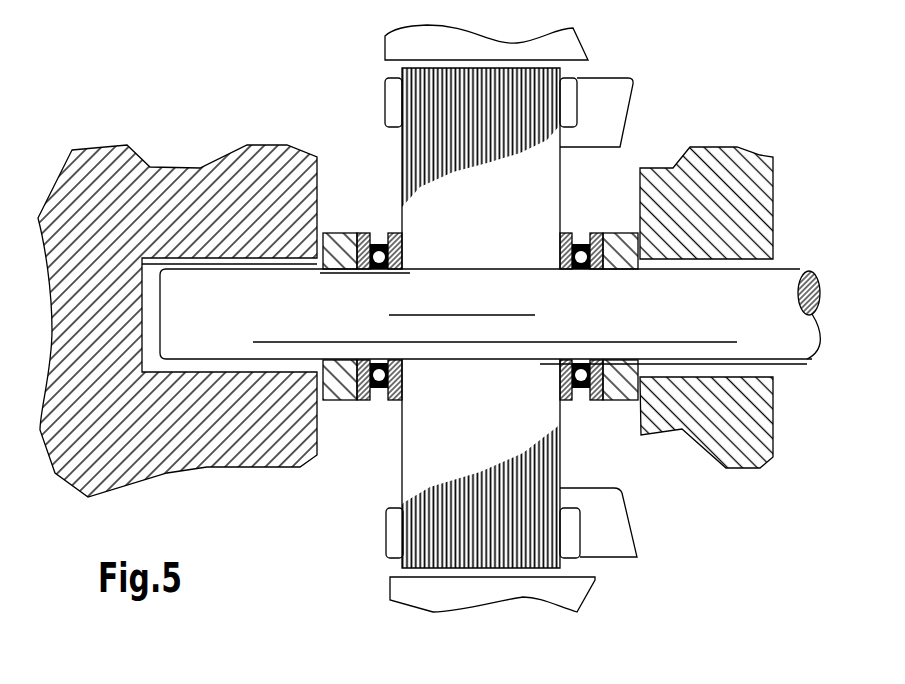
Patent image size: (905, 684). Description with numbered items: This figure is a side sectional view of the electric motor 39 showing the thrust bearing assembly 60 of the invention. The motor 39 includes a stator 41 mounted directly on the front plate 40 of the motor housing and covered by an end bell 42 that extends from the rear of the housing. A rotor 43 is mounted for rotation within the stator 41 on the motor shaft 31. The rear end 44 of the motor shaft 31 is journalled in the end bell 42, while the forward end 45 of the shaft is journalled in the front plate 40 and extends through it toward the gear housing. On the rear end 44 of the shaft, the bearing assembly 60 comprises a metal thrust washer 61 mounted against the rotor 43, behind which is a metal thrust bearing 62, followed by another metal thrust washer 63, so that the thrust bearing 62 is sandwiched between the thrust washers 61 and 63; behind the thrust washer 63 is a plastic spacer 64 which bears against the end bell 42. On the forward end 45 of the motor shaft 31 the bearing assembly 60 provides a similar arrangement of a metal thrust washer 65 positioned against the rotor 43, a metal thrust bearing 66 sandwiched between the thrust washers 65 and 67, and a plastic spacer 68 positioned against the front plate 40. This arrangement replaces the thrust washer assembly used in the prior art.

The motor shaft 31 is at (753, 295).
The electric motor 39 is at (702, 565).
The front plate 40 is at (748, 463).
The stator 41 is at (577, 50).
The end bell 42 is at (123, 468).
The rotor 43 is at (418, 470).
The rear end 44 is at (213, 302).
The forward end 45 is at (795, 348).
The thrust bearing assembly 60 is at (727, 90).
The metal thrust washer 61 is at (390, 235).
The metal thrust bearing 62 is at (378, 237).
The metal thrust washer 63 is at (362, 235).
The plastic spacer 64 is at (335, 383).
The metal thrust washer 65 is at (563, 233).
The metal thrust bearing 66 is at (580, 240).
The metal thrust washer 67 is at (595, 400).
The plastic spacer 68 is at (618, 400).